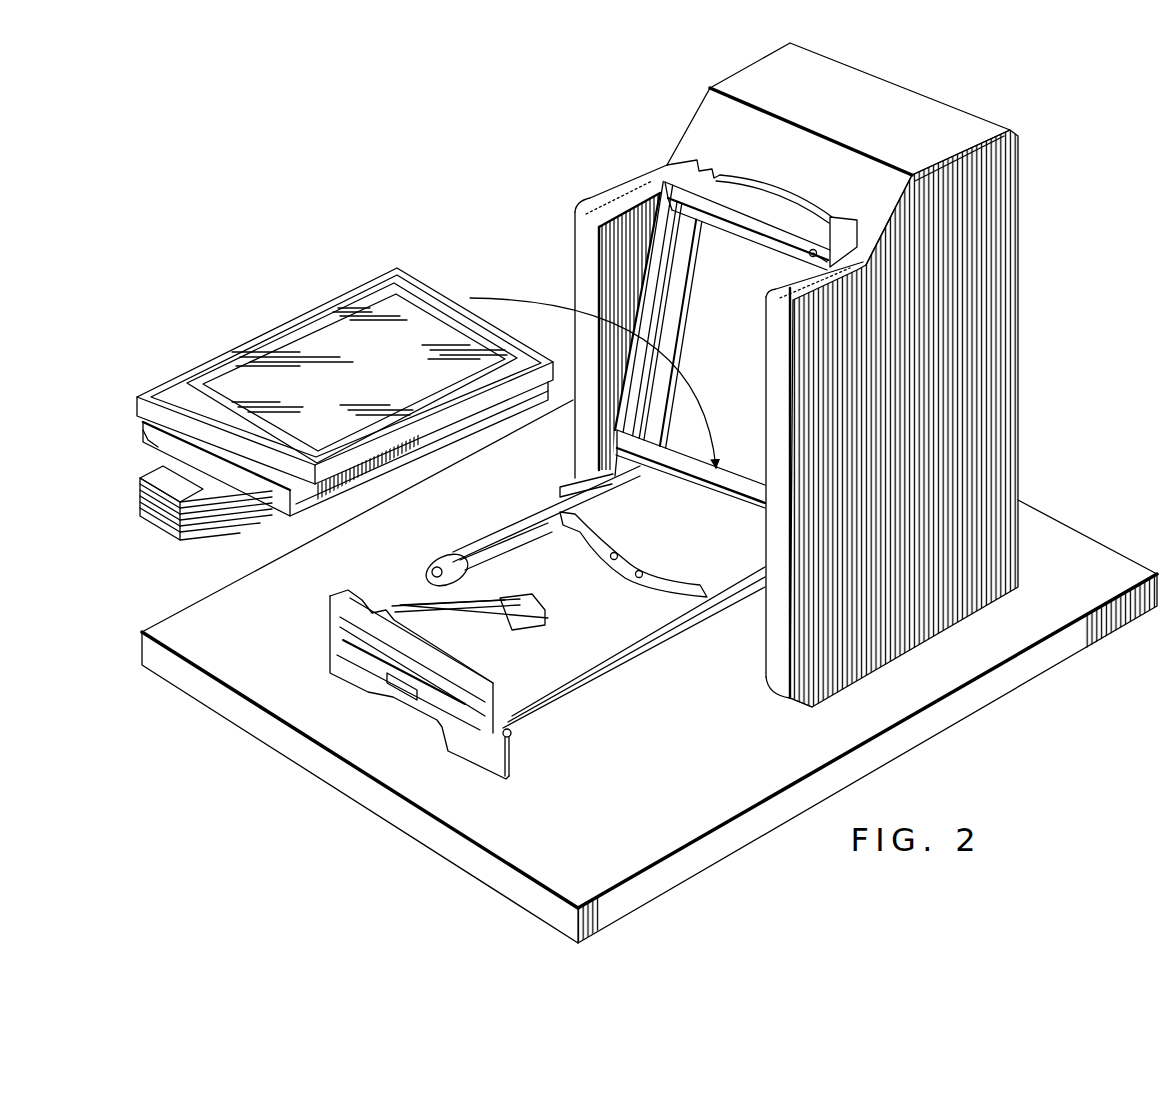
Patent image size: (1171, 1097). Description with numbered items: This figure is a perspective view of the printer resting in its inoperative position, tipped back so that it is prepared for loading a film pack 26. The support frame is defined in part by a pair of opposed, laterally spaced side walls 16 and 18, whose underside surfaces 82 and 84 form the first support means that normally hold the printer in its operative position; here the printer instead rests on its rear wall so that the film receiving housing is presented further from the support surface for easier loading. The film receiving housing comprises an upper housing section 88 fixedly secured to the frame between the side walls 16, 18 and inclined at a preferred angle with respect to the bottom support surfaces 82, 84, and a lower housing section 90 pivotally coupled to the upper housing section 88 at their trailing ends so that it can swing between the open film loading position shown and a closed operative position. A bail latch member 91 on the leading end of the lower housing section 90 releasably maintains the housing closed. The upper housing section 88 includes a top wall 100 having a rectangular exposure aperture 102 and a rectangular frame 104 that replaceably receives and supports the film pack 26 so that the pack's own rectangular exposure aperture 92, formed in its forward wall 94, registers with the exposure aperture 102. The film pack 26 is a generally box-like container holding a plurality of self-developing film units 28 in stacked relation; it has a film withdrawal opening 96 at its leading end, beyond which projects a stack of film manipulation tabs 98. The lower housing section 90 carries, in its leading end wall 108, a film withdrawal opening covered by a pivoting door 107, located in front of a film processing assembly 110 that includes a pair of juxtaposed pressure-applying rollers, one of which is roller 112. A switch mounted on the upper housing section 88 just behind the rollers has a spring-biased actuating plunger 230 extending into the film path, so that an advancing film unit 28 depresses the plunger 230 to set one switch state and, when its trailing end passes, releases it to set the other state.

The side wall 16 is at (1007, 413).
The side wall 18 is at (592, 196).
The film pack 26 is at (399, 262).
The self-developing film unit 28 is at (363, 379).
The underside surface of side wall 82 is at (778, 371).
The underside surface of side wall 84 is at (588, 260).
The upper housing section 88 is at (632, 210).
The lower housing section 90 is at (533, 512).
The bail latch member 91 is at (512, 768).
The exposure aperture 92 is at (312, 345).
The forward wall 94 is at (178, 391).
The film withdrawal opening 96 is at (145, 435).
The film manipulation tabs 98 is at (155, 512).
The top wall 100 is at (655, 212).
The exposure aperture 102 is at (755, 271).
The rectangular frame 104 is at (667, 268).
The pivoting door 107 is at (353, 642).
The leading end wall 108 is at (343, 610).
The film processing assembly 110 is at (472, 620).
The pressure-applying roller 112 is at (392, 604).
The actuating plunger 230 is at (815, 249).